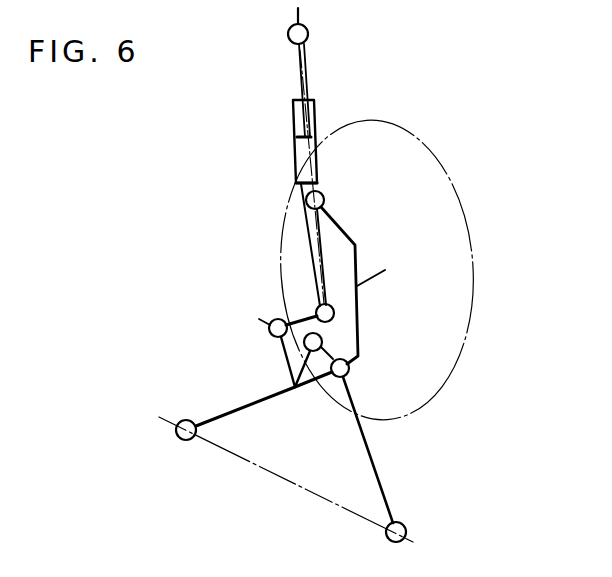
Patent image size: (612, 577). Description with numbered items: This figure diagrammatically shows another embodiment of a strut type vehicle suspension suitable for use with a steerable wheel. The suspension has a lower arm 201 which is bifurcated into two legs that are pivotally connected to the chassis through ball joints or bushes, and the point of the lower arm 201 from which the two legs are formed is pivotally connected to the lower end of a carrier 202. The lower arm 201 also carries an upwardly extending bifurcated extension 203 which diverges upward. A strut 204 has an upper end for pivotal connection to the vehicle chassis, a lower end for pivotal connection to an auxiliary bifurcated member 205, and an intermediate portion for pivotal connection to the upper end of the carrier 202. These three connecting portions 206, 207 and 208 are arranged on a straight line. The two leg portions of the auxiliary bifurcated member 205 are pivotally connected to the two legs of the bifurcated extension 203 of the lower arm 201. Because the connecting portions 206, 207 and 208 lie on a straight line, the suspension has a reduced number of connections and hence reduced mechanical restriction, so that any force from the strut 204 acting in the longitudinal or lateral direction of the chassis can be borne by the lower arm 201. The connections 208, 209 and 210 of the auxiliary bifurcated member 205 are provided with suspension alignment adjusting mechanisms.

The lower arm 201 is at (373, 462).
The carrier 202 is at (356, 247).
The bifurcated extension 203 is at (288, 361).
The strut 204 is at (315, 109).
The auxiliary bifurcated member 205 is at (307, 334).
The connecting portion 206 is at (309, 34).
The connecting portion 207 is at (324, 195).
The connecting portion 208 is at (317, 306).
The connection 209 is at (269, 327).
The connection 210 is at (322, 337).